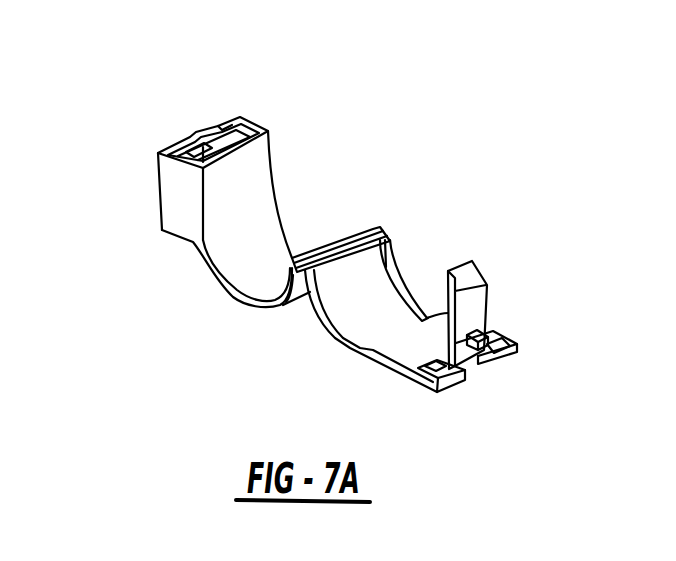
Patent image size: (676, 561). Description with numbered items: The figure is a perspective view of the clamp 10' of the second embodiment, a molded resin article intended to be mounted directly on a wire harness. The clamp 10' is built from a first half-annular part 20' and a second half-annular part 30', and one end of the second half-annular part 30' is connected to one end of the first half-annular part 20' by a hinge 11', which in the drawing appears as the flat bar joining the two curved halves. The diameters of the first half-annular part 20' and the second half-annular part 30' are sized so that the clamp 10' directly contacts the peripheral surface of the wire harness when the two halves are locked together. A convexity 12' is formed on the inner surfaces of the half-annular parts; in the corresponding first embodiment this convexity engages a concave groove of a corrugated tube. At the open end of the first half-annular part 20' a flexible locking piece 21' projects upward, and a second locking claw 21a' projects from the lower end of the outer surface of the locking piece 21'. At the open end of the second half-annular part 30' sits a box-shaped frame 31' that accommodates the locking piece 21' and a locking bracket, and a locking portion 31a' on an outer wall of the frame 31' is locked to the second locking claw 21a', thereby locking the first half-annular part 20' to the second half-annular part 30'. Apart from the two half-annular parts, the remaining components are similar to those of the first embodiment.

The clamp 10' is at (314, 191).
The hinge 11' is at (352, 198).
The convexity 12' is at (416, 246).
The first half-annular part 20' is at (327, 340).
The locking piece 21' is at (517, 312).
The second locking claw 21a' is at (486, 391).
The second half-annular part 30' is at (178, 273).
The box-shaped frame 31' is at (183, 179).
The locking portion 31a' is at (199, 93).